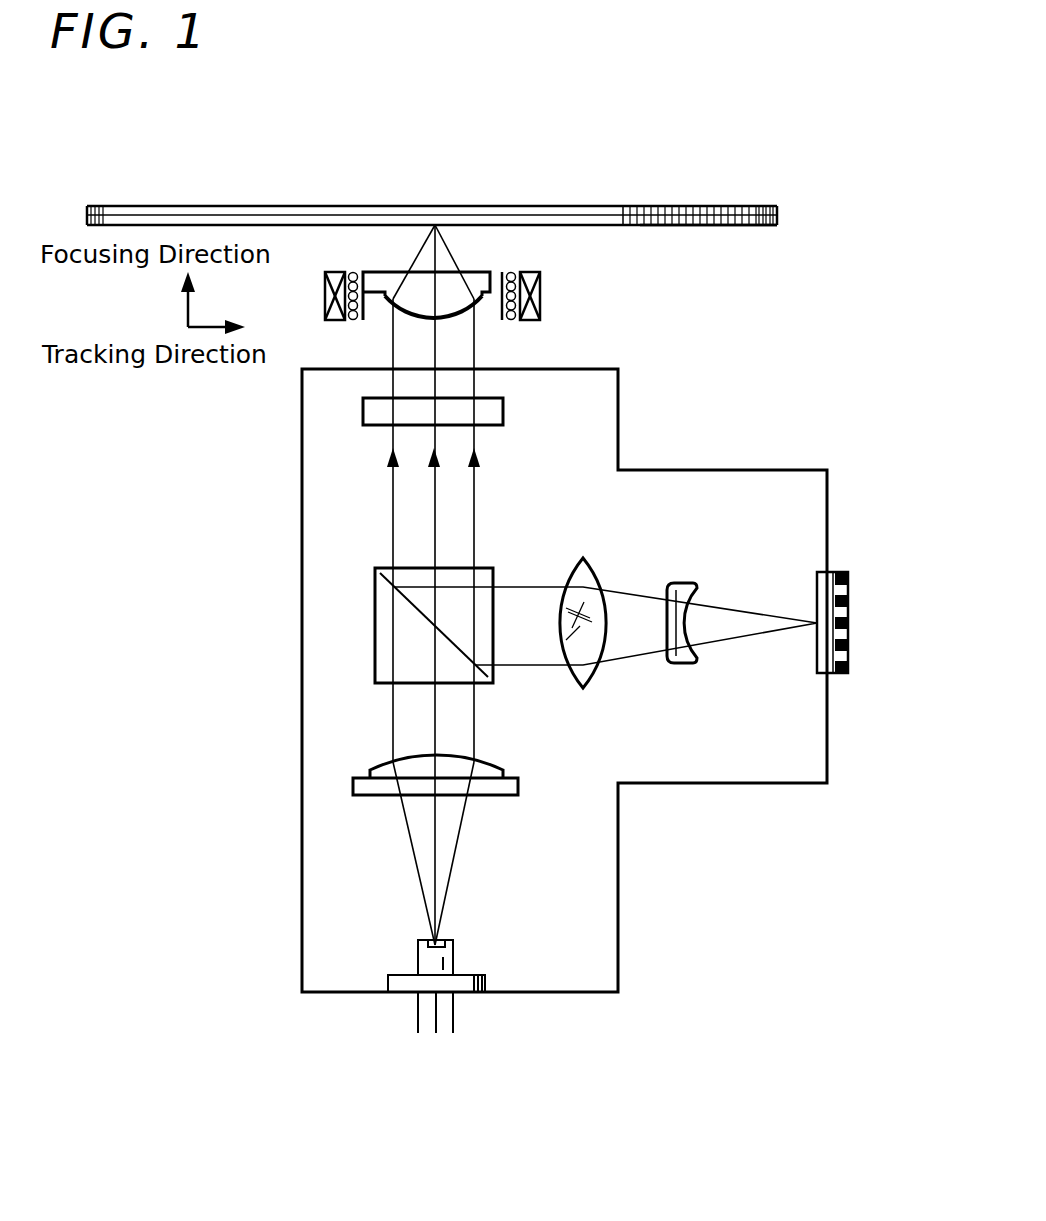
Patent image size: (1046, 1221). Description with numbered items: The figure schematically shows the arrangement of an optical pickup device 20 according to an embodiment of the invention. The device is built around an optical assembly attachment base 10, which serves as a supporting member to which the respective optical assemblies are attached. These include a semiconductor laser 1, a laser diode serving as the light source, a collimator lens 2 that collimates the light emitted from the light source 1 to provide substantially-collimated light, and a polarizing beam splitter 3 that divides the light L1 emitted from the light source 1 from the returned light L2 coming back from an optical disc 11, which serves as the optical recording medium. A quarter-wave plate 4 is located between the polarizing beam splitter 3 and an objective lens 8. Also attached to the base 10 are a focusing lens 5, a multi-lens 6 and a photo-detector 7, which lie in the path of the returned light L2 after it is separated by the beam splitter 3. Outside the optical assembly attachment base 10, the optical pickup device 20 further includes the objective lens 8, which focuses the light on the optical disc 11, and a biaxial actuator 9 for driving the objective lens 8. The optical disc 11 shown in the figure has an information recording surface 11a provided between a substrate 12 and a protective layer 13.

The semiconductor laser 1 is at (455, 958).
The collimator lens 2 is at (518, 788).
The polarizing beam splitter 3 is at (375, 622).
The quarter-wave plate 4 is at (503, 413).
The focusing lens 5 is at (598, 675).
The multi-lens 6 is at (695, 655).
The photo-detector 7 is at (817, 573).
The objective lens 8 is at (460, 318).
The biaxial actuator 9 is at (325, 300).
The optical assembly attachment base 10 is at (302, 698).
The optical disc 11 is at (563, 205).
The information recording surface 11a is at (610, 208).
The substrate 12 is at (757, 205).
The protective layer 13 is at (690, 228).
The optical pickup device 20 is at (237, 992).
The light emitted from the light source L1 is at (452, 870).
The returned light L2 is at (518, 668).